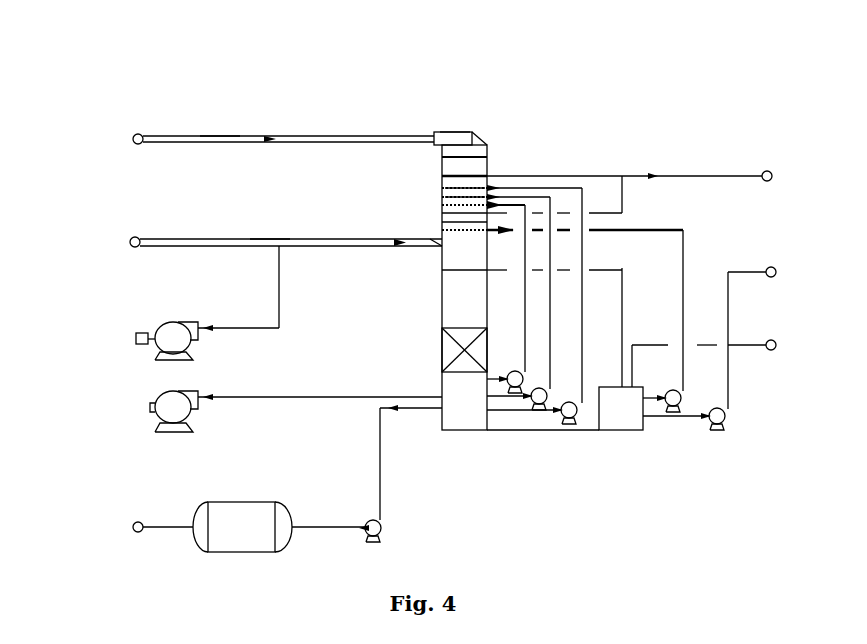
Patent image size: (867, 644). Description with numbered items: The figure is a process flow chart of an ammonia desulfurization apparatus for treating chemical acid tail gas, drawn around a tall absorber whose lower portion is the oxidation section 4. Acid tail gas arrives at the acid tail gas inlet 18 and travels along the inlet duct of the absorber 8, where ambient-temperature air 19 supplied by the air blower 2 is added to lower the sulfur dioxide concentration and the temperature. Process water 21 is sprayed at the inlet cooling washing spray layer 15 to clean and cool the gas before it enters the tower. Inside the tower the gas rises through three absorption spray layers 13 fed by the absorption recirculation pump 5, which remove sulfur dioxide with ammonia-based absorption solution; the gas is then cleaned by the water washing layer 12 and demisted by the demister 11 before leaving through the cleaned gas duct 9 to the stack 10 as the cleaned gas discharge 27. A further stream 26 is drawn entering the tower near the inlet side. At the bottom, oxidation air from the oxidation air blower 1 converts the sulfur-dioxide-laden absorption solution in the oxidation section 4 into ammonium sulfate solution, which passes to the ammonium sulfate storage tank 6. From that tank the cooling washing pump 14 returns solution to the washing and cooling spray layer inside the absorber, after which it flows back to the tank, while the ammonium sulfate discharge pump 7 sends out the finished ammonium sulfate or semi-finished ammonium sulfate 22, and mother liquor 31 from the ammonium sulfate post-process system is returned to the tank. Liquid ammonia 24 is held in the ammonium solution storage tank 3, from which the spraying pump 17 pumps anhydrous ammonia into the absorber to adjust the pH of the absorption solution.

The oxidation air blower 1 is at (83, 468).
The air blower 2 is at (502, 204).
The ammonium solution storage tank 3 is at (327, 553).
The absorber oxidation section 4 is at (469, 400).
The absorption recirculation pump 5 is at (519, 392).
The ammonium sulfate storage tank 6 is at (636, 415).
The ammonium sulfate discharge pump 7 is at (720, 430).
The inlet duct of the absorber 8 is at (266, 236).
The cleaned gas duct 9 is at (255, 63).
The stack 10 is at (83, 293).
The demister 11 is at (460, 162).
The water washing layer 12 is at (464, 192).
The absorber absorption spray layer 13 is at (470, 200).
The cooling washing pump 14 is at (676, 412).
The inlet cooling washing spray layer 15 is at (438, 243).
The spraying pump 17 is at (395, 553).
The acid tail gas inlet 18 is at (457, 131).
The air 19 is at (156, 398).
The process water 21 is at (654, 178).
The finished ammonium sulfate or semi-finished ammonium sulfate 22 is at (749, 324).
The liquid ammonia 24 is at (141, 515).
The flue gas inlet 26 is at (267, 225).
The cleaned gas discharge 27 is at (269, 114).
The mother liquor 31 is at (726, 360).